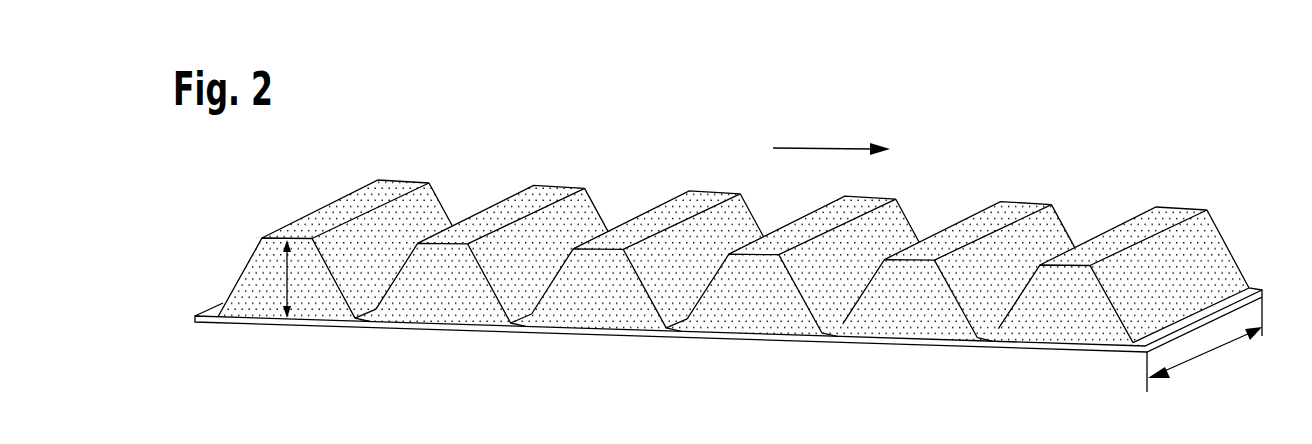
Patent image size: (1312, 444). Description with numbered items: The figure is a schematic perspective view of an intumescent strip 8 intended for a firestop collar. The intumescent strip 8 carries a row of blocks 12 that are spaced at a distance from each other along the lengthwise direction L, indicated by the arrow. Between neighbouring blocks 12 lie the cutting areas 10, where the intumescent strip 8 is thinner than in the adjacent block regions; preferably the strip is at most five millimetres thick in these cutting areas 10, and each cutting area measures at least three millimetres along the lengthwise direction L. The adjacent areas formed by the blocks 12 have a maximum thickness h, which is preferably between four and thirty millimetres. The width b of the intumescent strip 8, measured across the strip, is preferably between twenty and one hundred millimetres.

The intumescent strip 8 is at (728, 244).
The cutting areas 10 is at (353, 326).
The blocks 12 is at (555, 176).
The maximum thickness / maximum height of the blocks h is at (287, 288).
The width of the intumescent strip b is at (1207, 352).
The lengthwise direction L is at (830, 148).